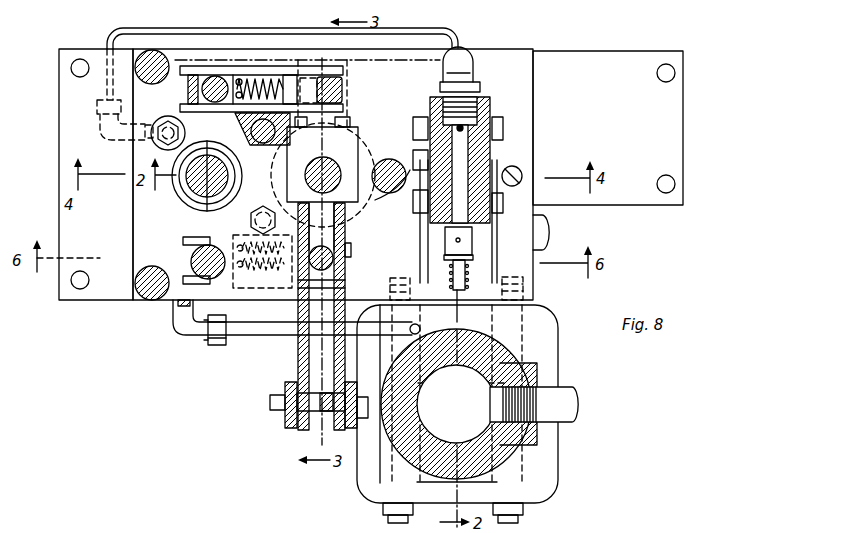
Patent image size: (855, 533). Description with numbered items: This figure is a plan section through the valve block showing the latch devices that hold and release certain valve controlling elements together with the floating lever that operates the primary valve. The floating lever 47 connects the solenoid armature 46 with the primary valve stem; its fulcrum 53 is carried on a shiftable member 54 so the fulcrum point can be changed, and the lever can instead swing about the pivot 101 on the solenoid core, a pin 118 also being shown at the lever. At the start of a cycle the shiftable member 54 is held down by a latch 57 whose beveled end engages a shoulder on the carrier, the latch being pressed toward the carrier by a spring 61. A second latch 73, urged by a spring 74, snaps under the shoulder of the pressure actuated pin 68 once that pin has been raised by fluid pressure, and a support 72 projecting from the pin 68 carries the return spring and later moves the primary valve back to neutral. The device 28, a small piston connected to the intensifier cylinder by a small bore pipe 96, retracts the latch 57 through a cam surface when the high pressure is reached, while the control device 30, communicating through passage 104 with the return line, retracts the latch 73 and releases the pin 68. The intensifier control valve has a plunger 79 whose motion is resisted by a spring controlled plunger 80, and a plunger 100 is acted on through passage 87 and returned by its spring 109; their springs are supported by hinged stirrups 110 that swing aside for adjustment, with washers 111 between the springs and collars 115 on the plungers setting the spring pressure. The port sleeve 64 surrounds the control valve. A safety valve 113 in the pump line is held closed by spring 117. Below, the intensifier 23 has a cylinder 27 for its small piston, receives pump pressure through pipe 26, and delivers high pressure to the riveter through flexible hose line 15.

The flexible hose line 15 is at (560, 386).
The intensifier 23 is at (558, 446).
The pipe 26 is at (548, 225).
The cylinder 27 is at (459, 404).
The device 28 is at (192, 258).
The control device 30 is at (216, 76).
The armature 46 is at (286, 420).
The floating lever 47 is at (347, 236).
The fulcrum 53 is at (352, 259).
The shiftable member 54 is at (346, 290).
The latch 57 is at (200, 237).
The spring 61 is at (262, 290).
The port sleeve 64 is at (535, 157).
The pressure actuated pin 68 is at (341, 87).
The support 72 is at (338, 152).
The latch 73 is at (293, 66).
The spring 74 is at (262, 78).
The plunger 79 is at (513, 166).
The spring controlled plunger 80 is at (463, 125).
The passage 87 is at (474, 52).
The small bore pipe 96 is at (224, 342).
The plunger 100 is at (410, 180).
The pivot 101 is at (320, 392).
The passage 104 is at (157, 117).
The spring 109 is at (467, 268).
The hinged stirrup 110 is at (503, 120).
The washer 111 is at (473, 256).
The safety valve 113 is at (192, 196).
The collar 115 is at (472, 236).
The spring 117 is at (207, 150).
The pivot pin 118 is at (337, 166).